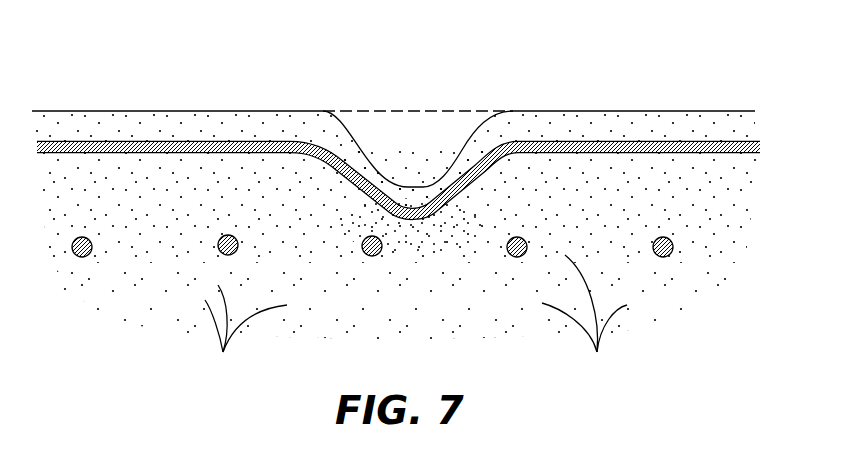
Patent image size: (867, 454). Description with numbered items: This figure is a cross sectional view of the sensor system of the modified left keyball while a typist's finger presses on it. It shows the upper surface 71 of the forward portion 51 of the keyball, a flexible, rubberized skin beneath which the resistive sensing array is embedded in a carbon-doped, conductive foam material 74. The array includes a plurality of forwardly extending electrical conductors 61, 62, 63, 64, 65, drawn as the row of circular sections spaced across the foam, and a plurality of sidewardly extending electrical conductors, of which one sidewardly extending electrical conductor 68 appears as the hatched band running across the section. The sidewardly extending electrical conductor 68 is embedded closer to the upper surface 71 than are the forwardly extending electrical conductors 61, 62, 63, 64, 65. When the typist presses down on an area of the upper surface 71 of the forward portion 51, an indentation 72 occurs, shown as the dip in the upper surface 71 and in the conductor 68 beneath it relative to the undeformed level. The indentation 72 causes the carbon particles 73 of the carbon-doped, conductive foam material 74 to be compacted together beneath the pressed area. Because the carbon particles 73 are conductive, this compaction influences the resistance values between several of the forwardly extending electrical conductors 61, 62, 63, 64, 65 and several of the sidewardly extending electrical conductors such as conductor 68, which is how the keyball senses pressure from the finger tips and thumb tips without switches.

The forward portion 51 is at (582, 58).
The forwardly extending electrical conductor 61 is at (91, 238).
The forwardly extending electrical conductor 62 is at (238, 237).
The forwardly extending electrical conductor 63 is at (362, 252).
The forwardly extending electrical conductor 64 is at (527, 238).
The forwardly extending electrical conductor 65 is at (673, 238).
The sidewardly extending electrical conductor 68 is at (712, 141).
The upper surface 71 is at (157, 110).
The indentation 72 is at (406, 128).
The carbon particles 73 is at (416, 319).
The carbon-doped, conductive foam material 74 is at (782, 212).